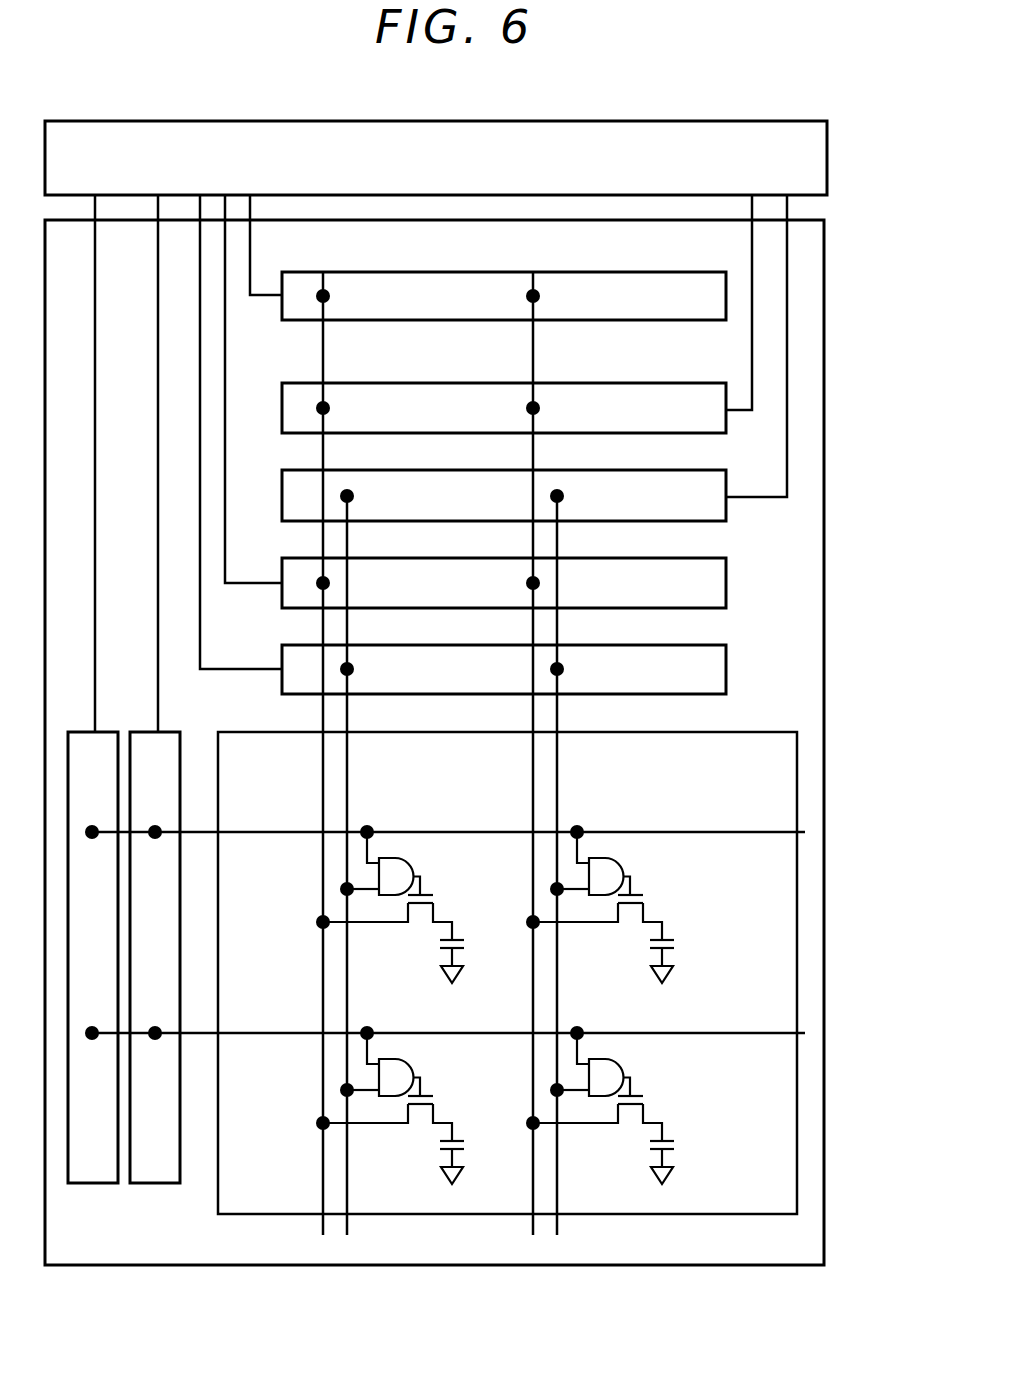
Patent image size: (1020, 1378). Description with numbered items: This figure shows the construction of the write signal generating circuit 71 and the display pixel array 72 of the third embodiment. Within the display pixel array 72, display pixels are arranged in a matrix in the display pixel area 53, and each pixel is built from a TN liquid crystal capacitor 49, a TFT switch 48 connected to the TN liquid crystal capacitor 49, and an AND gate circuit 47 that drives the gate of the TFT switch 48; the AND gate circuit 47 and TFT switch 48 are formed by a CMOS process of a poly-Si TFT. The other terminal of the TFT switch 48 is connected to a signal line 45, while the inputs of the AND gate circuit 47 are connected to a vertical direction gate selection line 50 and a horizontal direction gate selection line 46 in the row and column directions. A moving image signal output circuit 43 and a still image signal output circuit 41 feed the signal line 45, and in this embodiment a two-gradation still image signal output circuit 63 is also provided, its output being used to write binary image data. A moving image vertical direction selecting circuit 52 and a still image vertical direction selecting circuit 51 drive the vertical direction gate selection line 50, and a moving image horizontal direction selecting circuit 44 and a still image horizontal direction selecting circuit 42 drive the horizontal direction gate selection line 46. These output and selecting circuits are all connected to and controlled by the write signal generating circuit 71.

The write signal generating circuit 71 is at (829, 161).
The display pixel array 72 is at (826, 739).
The two-gradation still image signal output circuit 63 is at (612, 272).
The still image signal output circuit 41 is at (612, 383).
The still image horizontal direction selecting circuit 42 is at (612, 470).
The moving image signal output circuit 43 is at (612, 558).
The moving image horizontal direction selecting circuit 44 is at (612, 645).
The signal line 45 is at (320, 772).
The horizontal direction gate selection line 46 is at (352, 778).
The AND gate circuit 47 is at (397, 860).
The TFT switch 48 is at (440, 906).
The TN liquid crystal capacitor 49 is at (462, 938).
The vertical direction gate selection line 50 is at (712, 832).
The still image vertical direction selecting circuit 51 is at (93, 1184).
The moving image vertical direction selecting circuit 52 is at (156, 1184).
The display pixel area 53 is at (688, 1216).